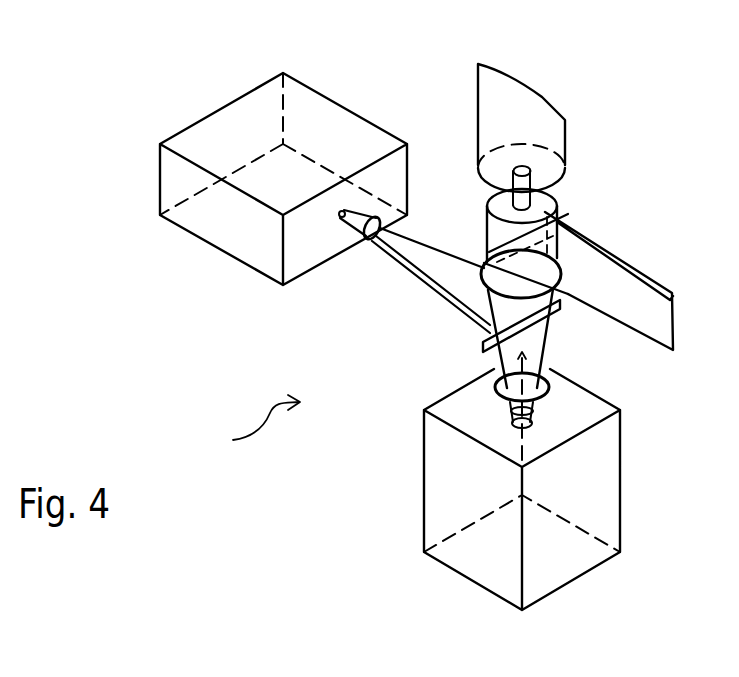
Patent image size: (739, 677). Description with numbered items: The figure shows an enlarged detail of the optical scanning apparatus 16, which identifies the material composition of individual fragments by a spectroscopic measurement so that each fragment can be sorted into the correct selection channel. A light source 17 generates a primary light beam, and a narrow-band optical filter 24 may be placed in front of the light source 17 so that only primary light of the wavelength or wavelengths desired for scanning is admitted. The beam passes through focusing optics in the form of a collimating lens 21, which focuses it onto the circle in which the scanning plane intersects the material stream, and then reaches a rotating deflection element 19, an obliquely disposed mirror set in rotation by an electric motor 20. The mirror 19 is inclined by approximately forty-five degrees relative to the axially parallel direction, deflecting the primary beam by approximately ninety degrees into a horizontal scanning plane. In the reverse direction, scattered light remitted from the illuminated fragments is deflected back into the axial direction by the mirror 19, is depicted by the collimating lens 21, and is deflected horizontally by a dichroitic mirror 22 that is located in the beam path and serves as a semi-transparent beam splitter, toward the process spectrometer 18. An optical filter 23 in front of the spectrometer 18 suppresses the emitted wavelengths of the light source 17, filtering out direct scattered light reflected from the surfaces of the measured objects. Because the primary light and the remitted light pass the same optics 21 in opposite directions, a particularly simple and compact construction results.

The optical scanning apparatus 16 is at (210, 474).
The light source 17 is at (601, 556).
The process spectrometer 18 is at (247, 100).
The rotating deflection element 19 is at (541, 216).
The electric motor 20 is at (538, 127).
The collimating lens 21 is at (563, 225).
The dichroitic mirror 22 is at (538, 316).
The optical filter 23 is at (373, 247).
The narrow-band optical filter 24 is at (538, 363).